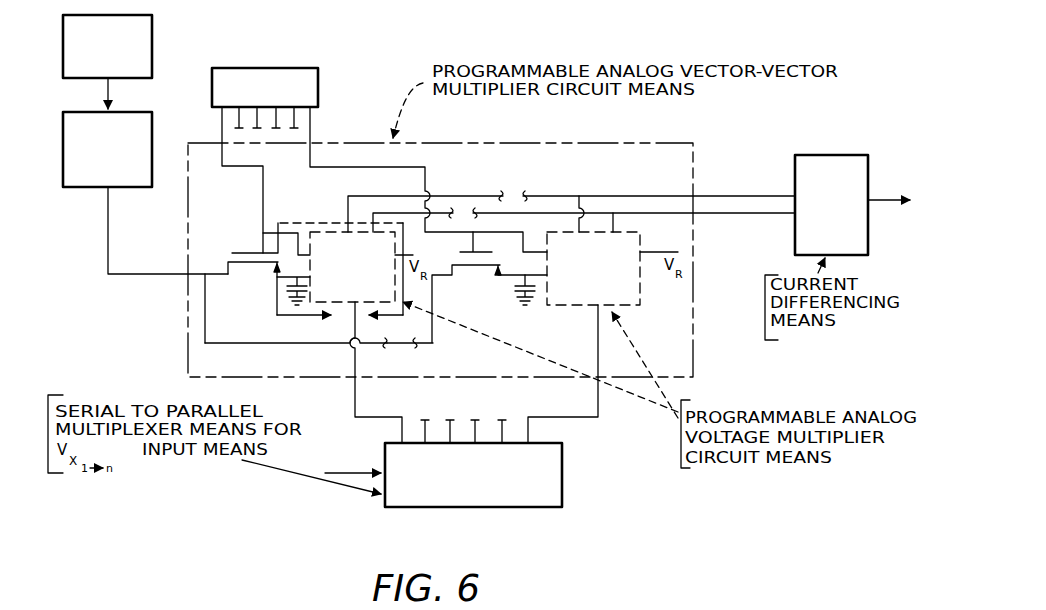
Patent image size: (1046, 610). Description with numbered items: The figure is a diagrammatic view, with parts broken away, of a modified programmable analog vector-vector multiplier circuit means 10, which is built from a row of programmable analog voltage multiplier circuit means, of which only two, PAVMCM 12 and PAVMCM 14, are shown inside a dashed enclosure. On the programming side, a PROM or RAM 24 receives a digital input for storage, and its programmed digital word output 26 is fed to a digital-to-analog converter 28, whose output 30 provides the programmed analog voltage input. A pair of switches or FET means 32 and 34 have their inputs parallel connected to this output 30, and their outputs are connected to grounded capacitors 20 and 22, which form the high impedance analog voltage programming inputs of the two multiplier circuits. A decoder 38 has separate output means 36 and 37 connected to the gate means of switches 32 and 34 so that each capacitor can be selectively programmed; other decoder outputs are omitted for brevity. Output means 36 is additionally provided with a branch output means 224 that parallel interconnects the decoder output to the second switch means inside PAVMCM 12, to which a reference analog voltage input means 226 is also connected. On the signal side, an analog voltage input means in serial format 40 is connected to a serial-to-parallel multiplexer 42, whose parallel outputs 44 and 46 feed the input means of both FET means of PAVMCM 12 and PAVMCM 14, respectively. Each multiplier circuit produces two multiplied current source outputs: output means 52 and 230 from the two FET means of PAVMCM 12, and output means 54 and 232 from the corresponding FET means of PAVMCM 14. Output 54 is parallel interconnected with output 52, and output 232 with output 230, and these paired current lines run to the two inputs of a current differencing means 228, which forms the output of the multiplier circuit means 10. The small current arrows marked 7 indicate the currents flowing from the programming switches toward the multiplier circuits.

The PROM or RAM 24 is at (152, 31).
The programmed digital word output 26 is at (111, 94).
The digital-to-analog converter 28 is at (84, 188).
The output of the D/A converter 30 is at (107, 246).
The decoder 38 is at (318, 81).
The decoder output means 36 is at (264, 183).
The branch output means 224 is at (280, 232).
The switch or FET means 32 is at (263, 266).
The grounded capacitor 20 is at (284, 292).
The output current 7 is at (340, 326).
The multiplied current source output means 52 is at (347, 208).
The multiplied current source output means 230 is at (373, 219).
The decoder output means 37 is at (426, 183).
The reference analog voltage input means 226 is at (406, 254).
The programmable analog voltage multiplier circuit means 12 is at (362, 276).
The switch or FET means 34 is at (470, 270).
The grounded capacitor 22 is at (512, 287).
The multiplied current source output means 54 is at (568, 200).
The multiplied current source output means 232 is at (614, 223).
The programmable analog voltage multiplier circuit means 14 is at (603, 276).
The current differencing means 228 is at (846, 215).
The multiplexer output means 44 is at (357, 405).
The multiplexer output means 46 is at (577, 418).
The analog voltage input means in serial format 40 is at (349, 472).
The serial-to-parallel multiplexer 42 is at (473, 463).
The programmable analog vector-vector multiplier circuit means 10 is at (698, 360).